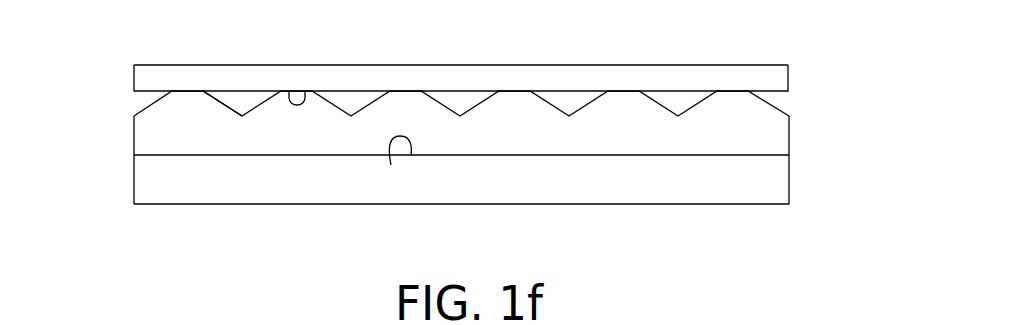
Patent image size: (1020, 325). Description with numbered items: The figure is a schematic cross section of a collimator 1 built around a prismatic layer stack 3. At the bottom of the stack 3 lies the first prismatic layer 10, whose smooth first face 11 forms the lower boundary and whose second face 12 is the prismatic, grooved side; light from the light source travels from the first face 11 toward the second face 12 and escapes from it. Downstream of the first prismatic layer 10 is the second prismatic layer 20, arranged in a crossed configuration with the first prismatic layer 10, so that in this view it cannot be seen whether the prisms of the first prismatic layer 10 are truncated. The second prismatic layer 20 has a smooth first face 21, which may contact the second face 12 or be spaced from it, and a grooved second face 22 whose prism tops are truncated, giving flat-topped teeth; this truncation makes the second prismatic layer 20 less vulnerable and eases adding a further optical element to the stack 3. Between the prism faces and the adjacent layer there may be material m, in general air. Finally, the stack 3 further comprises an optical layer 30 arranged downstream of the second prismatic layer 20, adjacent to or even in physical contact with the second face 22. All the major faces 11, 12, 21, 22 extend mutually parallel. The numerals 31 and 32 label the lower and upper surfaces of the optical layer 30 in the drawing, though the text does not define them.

The collimator 1 is at (100, 77).
The prismatic layer stack 3 is at (118, 153).
The first prismatic layer 10 is at (802, 183).
The first face 11 is at (500, 205).
The second face 12 is at (322, 156).
The second prismatic layer 20 is at (802, 136).
The first face 21 is at (391, 165).
The second face 22 is at (305, 91).
The optical layer 30 is at (806, 71).
The prism / structured bottom surface of plate 31 is at (777, 92).
The top surface of plate 32 is at (627, 64).
The material m is at (226, 102).